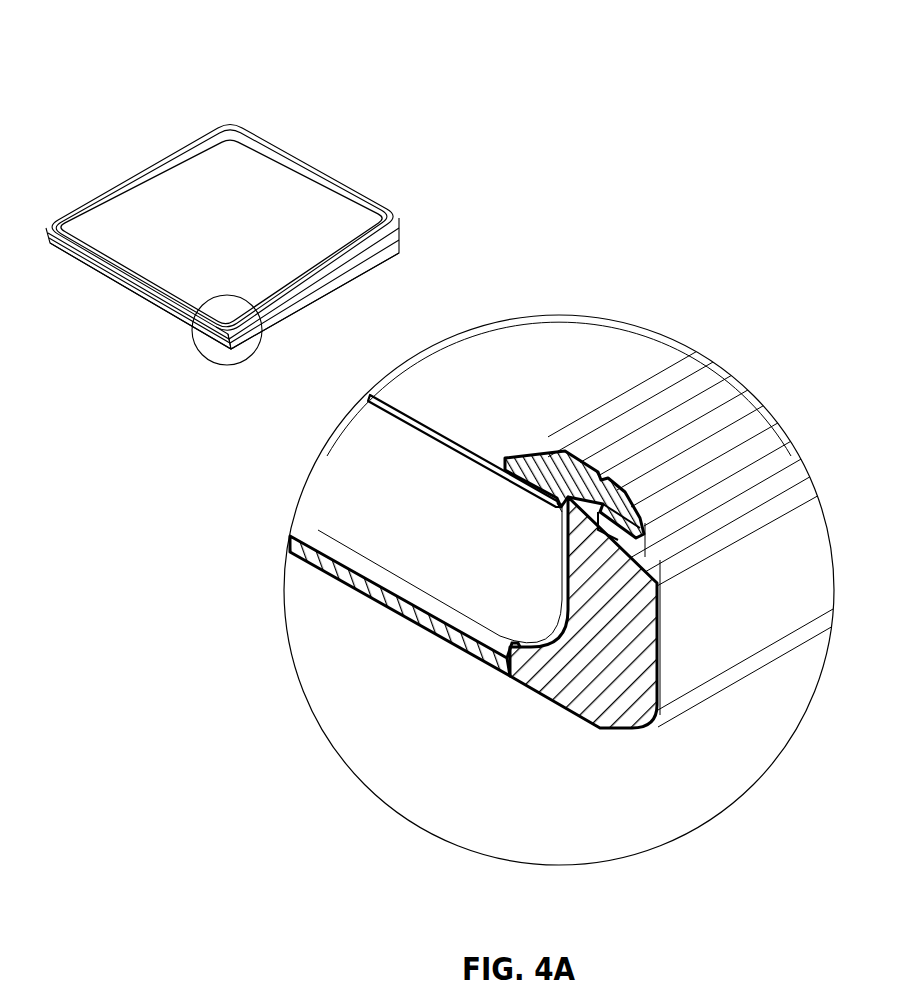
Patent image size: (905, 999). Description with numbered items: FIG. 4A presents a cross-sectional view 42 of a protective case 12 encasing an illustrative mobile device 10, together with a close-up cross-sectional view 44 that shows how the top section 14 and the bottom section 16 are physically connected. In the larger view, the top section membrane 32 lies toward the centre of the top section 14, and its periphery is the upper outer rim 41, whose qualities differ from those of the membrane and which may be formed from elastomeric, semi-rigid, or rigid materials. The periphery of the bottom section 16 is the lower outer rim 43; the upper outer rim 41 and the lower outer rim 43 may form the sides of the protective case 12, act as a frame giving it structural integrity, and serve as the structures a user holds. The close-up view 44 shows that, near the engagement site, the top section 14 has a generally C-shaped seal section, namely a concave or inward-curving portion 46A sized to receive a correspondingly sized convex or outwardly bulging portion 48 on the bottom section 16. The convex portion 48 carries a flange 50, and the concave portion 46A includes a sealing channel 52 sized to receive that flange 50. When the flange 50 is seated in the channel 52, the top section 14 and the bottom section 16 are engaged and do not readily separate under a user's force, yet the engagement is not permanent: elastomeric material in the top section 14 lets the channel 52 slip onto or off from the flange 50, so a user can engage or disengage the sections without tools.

The mobile device 10 is at (250, 232).
The protective case 12 is at (228, 118).
The top section 14 is at (399, 220).
The bottom section 16 is at (396, 250).
The top section membrane 32 is at (432, 423).
The upper outer rim 41 is at (270, 146).
The cross-sectional view 42 is at (350, 124).
The lower outer rim 43 is at (268, 320).
The close-up cross-sectional view 44 is at (724, 324).
The concave portion 46A is at (598, 466).
The convex portion 48 is at (588, 552).
The flange 50 is at (590, 519).
The sealing channel 52 is at (632, 517).